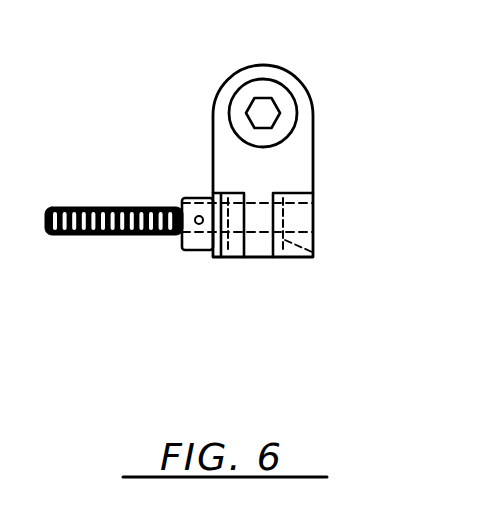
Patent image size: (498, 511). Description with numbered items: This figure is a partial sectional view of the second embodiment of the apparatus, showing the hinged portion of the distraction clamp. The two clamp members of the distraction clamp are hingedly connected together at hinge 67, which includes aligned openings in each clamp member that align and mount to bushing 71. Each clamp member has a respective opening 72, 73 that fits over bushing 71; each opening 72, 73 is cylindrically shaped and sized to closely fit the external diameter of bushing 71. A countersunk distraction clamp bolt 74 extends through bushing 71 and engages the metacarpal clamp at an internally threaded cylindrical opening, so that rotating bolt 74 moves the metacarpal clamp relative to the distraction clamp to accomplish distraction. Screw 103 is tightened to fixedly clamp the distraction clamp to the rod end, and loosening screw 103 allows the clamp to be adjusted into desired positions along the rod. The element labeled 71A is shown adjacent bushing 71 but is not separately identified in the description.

The bushing 71 is at (188, 198).
The clamp plate 71A is at (201, 228).
The opening 72 is at (218, 190).
The opening 73 is at (265, 192).
The countersunk distraction clamp bolt 74 is at (177, 237).
The hinge 67 is at (268, 258).
The screw 103 is at (276, 102).